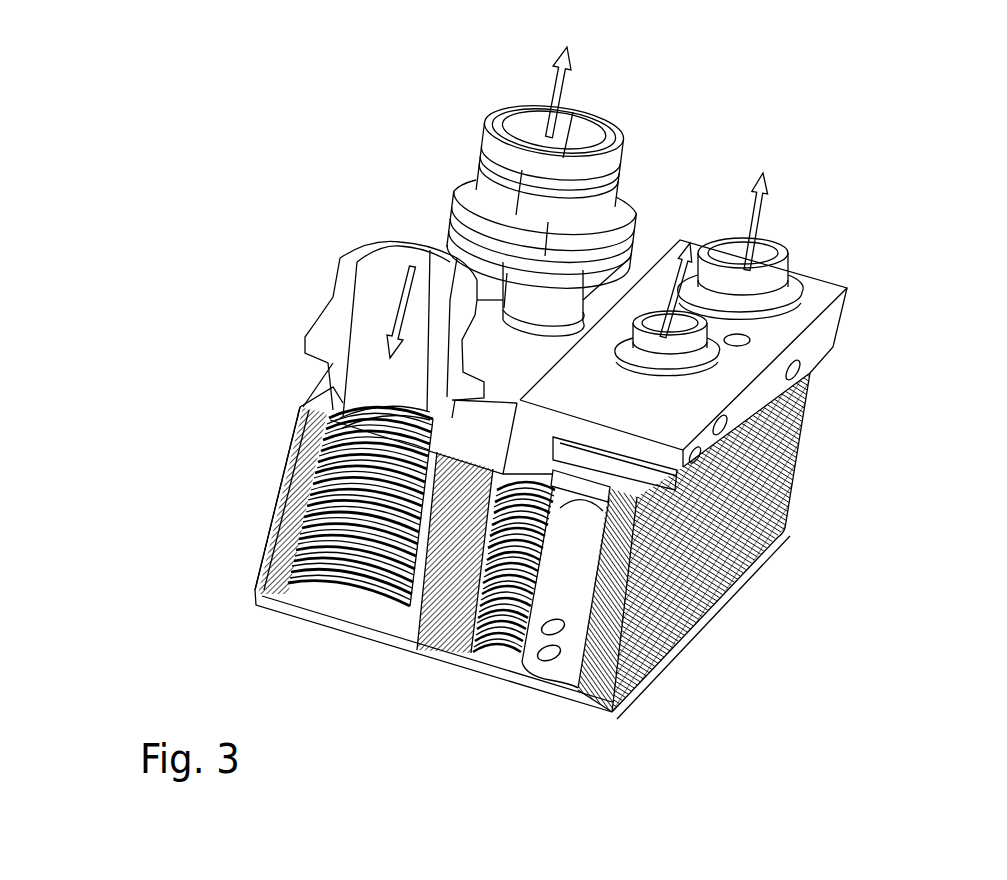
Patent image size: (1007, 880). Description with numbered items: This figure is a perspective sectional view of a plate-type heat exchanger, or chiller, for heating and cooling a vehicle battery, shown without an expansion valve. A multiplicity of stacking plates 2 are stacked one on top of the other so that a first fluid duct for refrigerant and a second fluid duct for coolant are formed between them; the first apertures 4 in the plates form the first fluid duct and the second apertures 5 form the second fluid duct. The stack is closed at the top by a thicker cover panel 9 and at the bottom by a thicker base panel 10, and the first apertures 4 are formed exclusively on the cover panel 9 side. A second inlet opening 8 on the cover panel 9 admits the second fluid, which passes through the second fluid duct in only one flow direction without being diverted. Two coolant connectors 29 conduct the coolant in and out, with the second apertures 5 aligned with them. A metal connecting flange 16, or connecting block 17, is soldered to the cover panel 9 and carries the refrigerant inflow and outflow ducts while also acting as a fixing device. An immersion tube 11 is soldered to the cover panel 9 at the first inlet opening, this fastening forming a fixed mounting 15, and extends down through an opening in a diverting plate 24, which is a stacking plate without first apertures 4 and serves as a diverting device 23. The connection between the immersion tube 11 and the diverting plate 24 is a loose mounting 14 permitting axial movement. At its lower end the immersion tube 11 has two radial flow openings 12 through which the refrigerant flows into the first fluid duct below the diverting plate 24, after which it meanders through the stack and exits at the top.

The stacking plate 2 is at (290, 447).
The first aperture 4 is at (502, 648).
The second aperture 5 is at (340, 603).
The second inlet opening 8 is at (293, 407).
The cover panel 9 is at (303, 398).
The base panel 10 is at (262, 612).
The immersion tube 11 is at (630, 653).
The flow opening 12 is at (575, 698).
The loose mounting 14 is at (610, 680).
The fixed mounting 15 is at (762, 547).
The connecting flange 16 is at (843, 295).
The connecting block 17 is at (843, 295).
The diverting device 23 is at (468, 650).
The diverting plate 24 is at (468, 650).
The coolant connector 29 is at (510, 183).